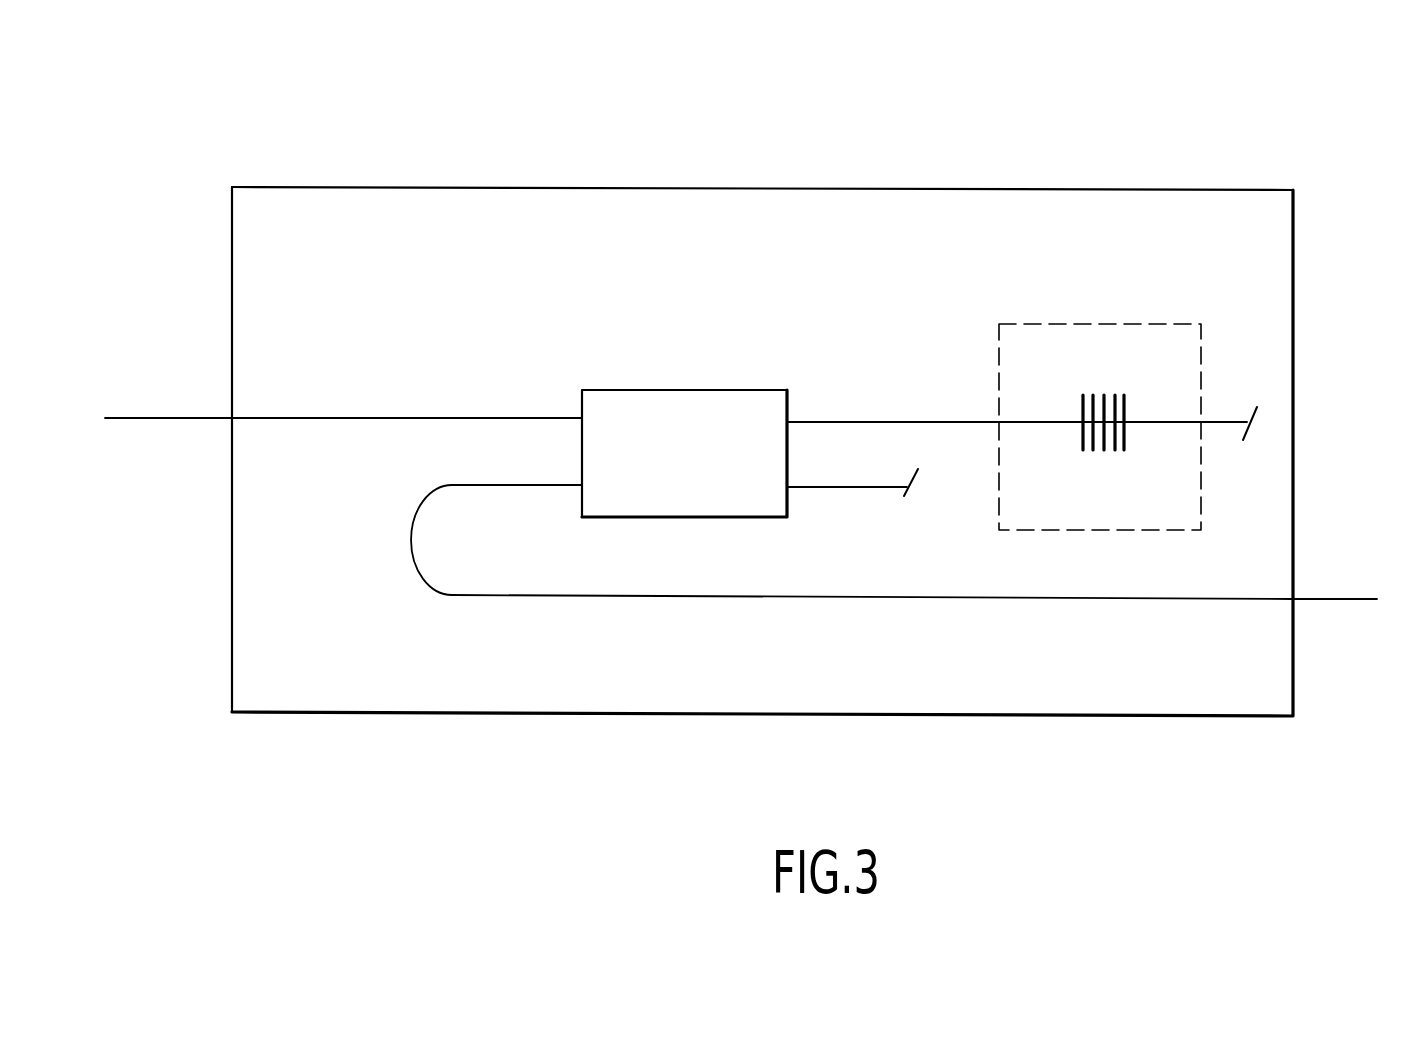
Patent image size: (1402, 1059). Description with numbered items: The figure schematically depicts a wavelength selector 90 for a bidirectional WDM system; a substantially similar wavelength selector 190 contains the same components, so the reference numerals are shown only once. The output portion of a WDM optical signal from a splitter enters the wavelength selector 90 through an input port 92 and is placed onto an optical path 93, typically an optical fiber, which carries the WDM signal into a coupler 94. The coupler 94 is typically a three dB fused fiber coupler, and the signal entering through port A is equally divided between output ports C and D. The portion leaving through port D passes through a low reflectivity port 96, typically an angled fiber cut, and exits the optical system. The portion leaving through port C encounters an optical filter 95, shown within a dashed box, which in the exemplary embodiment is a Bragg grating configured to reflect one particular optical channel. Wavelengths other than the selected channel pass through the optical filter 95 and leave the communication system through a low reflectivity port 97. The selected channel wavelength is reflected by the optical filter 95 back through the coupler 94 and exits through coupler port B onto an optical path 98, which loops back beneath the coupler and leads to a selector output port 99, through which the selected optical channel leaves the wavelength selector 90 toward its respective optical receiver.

The wavelength selector 90 is at (762, 389).
The wavelength selector 190 is at (743, 172).
The input port 92 is at (233, 417).
The optical path 93 is at (431, 417).
The coupler 94 is at (695, 420).
The optical filter 95 is at (1107, 393).
The low reflectivity port 96 is at (906, 496).
The low reflectivity port 97 is at (1256, 408).
The optical path 98 is at (548, 596).
The selector output port 99 is at (1292, 600).